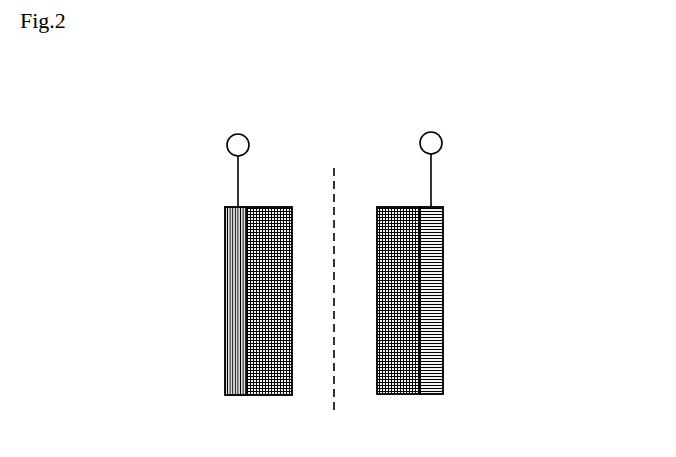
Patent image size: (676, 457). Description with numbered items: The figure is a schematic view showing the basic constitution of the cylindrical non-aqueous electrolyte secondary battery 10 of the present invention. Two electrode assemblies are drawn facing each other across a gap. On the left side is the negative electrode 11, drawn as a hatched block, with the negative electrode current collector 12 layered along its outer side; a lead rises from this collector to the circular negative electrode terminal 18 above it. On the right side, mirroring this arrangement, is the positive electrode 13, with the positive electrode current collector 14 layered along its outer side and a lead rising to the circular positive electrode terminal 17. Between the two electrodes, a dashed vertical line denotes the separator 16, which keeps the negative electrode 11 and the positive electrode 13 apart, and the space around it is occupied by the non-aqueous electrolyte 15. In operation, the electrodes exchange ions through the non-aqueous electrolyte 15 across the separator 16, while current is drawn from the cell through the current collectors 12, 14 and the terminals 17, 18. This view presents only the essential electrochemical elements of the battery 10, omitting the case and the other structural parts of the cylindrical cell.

The cylindrical non-aqueous electrolyte secondary battery 10 is at (338, 118).
The negative electrode 11 is at (268, 397).
The negative electrode current collector 12 is at (228, 373).
The positive electrode 13 is at (393, 395).
The positive electrode current collector 14 is at (432, 383).
The non-aqueous electrolyte 15 is at (362, 303).
The separator 16 is at (338, 183).
The positive electrode terminal 17 is at (443, 134).
The negative electrode terminal 18 is at (250, 139).